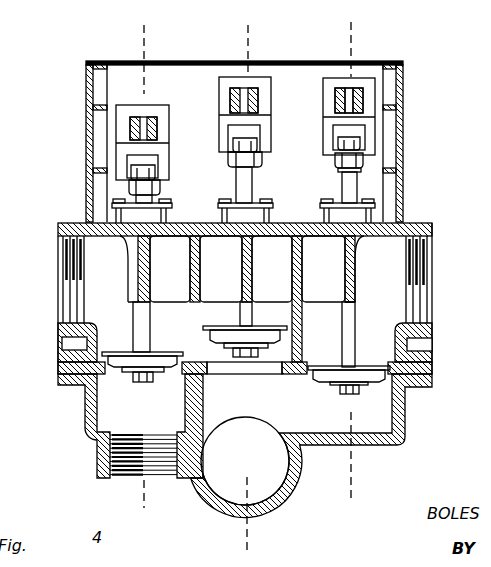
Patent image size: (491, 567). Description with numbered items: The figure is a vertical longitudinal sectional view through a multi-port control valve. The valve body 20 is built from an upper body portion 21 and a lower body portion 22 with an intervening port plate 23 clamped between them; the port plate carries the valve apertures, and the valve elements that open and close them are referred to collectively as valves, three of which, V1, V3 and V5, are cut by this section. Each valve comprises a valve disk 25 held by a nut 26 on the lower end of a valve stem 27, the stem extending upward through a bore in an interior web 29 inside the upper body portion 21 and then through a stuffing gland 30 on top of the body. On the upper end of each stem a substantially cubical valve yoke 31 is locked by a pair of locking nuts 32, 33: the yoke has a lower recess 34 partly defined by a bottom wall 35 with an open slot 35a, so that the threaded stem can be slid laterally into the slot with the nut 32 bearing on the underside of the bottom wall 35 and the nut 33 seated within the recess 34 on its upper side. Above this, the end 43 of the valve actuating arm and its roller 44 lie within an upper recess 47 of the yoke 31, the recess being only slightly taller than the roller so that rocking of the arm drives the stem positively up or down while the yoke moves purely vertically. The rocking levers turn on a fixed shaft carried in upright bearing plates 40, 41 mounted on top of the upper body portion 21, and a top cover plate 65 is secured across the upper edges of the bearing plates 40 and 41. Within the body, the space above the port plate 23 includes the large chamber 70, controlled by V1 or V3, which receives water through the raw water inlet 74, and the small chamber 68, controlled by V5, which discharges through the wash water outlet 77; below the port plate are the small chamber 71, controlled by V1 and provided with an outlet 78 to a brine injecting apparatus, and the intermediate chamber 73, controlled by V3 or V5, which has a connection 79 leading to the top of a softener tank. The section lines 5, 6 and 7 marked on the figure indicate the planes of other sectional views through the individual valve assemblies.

The section line 5- 5 is at (141, 33).
The section line 6- 6 is at (246, 33).
The section line 7- 7 is at (349, 34).
The valve body 20 is at (80, 400).
The upper body portion 21 is at (73, 221).
The lower body portion 22 is at (62, 382).
The port plate 23 is at (58, 365).
The valve disk 25 is at (372, 362).
The nut 26 is at (349, 394).
The valve stem 27 is at (345, 182).
The interior web 29 is at (170, 269).
The stuffing gland 30 is at (348, 216).
The valve yoke 31 is at (363, 118).
The locking nut 32 is at (363, 166).
The locking nut 33 is at (358, 145).
The lower recess 34 is at (357, 130).
The bottom wall 35 is at (360, 160).
The open slot 35a is at (345, 162).
The bearing plate 40 is at (86, 125).
The bearing plate 41 is at (404, 190).
The end of the valve actuating arm 43 is at (362, 102).
The roller 44 is at (350, 92).
The upper recess 47 is at (336, 96).
The top cover plate 65 is at (172, 62).
The small chamber 68 is at (291, 287).
The large chamber 70 is at (227, 329).
The small chamber 71 is at (155, 412).
The chamber of intermediate size 73 is at (293, 414).
The raw water inlet 74 is at (72, 242).
The wash water outlet 77 is at (418, 265).
The outlet 78 is at (103, 458).
The connection 79 is at (258, 496).
The valve V1 is at (143, 385).
The valve V3 is at (248, 376).
The valve V5 is at (314, 386).